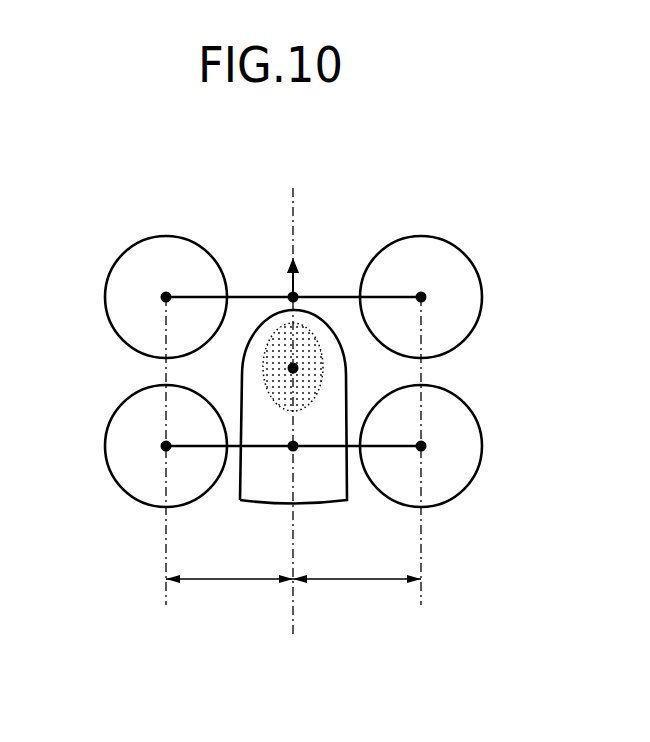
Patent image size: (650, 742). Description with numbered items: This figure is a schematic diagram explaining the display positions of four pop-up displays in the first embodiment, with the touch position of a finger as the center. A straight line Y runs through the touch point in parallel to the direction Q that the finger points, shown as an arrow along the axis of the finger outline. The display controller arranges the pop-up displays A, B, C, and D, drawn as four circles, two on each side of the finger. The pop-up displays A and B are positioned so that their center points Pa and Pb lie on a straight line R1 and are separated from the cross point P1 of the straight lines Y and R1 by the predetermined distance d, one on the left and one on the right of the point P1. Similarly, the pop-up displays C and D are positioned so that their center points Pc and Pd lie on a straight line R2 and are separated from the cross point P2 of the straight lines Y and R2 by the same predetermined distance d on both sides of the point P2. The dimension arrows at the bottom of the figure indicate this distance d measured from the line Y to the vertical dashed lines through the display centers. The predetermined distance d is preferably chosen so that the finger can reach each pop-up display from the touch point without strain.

The pop-up display A is at (168, 236).
The pop-up display B is at (423, 237).
The pop-up display C is at (105, 446).
The pop-up display D is at (482, 446).
The center point of pop-up display A Pa is at (166, 297).
The center point of pop-up display B Pb is at (421, 297).
The center point of pop-up display C Pc is at (166, 446).
The center point of pop-up display D Pd is at (421, 446).
The cross point of straight lines Y and R1 P1 is at (298, 288).
The cross point of straight lines Y and R2 P2 is at (293, 446).
The direction that a finger points Q is at (295, 279).
The straight line R1 is at (263, 297).
The straight line R2 is at (236, 450).
The straight line Y is at (295, 198).
The predetermined distance d is at (293, 591).